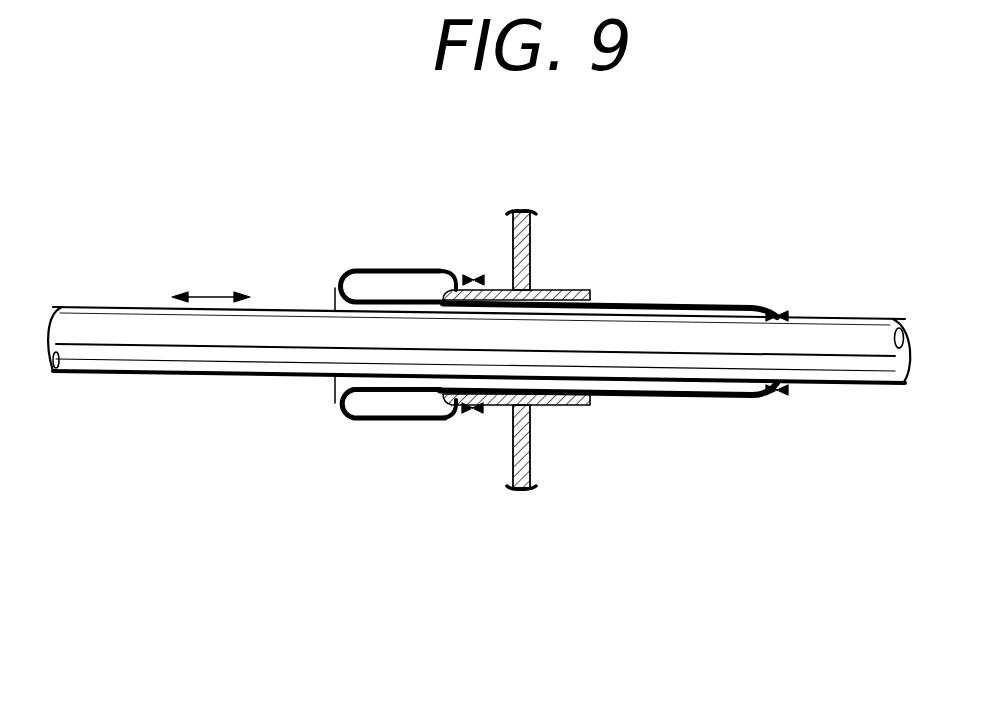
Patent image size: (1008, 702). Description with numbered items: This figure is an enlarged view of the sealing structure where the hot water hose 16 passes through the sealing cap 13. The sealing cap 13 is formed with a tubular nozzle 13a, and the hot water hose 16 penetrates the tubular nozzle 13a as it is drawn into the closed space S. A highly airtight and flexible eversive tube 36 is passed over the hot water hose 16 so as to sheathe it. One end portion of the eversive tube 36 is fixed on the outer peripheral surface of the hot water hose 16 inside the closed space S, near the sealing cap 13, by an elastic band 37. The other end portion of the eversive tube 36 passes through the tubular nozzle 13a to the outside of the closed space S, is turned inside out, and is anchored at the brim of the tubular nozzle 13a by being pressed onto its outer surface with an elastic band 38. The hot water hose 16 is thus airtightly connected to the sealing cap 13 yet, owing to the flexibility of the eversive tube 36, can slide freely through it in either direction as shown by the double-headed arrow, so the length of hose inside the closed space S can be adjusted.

The sealing cap 13 is at (513, 230).
The tubular nozzle 13a is at (563, 290).
The hot water hose 16 is at (207, 376).
The eversive tube 36 is at (672, 388).
The elastic band 37 is at (778, 310).
The elastic band 38 is at (467, 413).
The closed space S is at (708, 230).